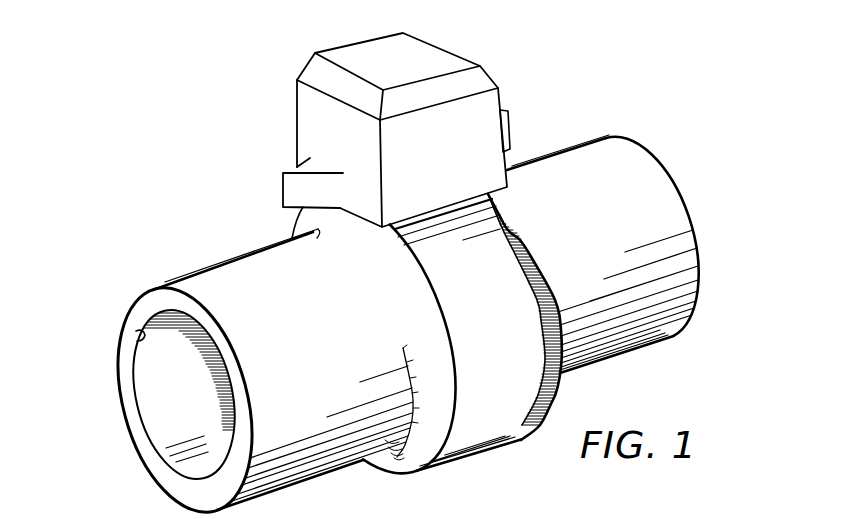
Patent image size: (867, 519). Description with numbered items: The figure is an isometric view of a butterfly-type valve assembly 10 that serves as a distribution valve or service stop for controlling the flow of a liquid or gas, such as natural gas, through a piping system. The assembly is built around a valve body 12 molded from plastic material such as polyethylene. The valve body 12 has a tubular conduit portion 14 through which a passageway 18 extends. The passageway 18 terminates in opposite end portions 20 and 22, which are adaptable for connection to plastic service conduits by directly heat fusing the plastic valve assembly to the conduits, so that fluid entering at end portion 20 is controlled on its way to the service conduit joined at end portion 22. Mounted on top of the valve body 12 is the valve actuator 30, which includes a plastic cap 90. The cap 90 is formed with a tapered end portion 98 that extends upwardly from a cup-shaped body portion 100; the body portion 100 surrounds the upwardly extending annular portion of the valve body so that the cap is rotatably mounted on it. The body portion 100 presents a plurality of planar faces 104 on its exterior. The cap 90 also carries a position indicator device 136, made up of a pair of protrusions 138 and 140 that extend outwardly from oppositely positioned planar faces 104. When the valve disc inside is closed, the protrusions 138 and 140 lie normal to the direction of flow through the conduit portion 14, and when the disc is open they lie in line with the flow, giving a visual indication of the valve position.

The valve assembly 10 is at (235, 204).
The valve body 12 is at (480, 459).
The conduit portion 14 is at (683, 251).
The passageway 18 is at (158, 433).
The end portion 20 is at (140, 333).
The end portion 22 is at (683, 190).
The valve actuator 30 is at (402, 113).
The cap 90 is at (357, 48).
The tapered end portion 98 is at (478, 81).
The body portion 100 is at (297, 110).
The planar faces 104 is at (310, 99).
The position indicator device 136 is at (275, 203).
The protrusion 138 is at (285, 172).
The protrusion 140 is at (512, 123).